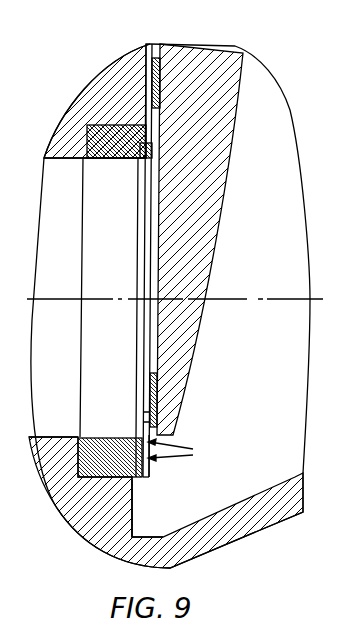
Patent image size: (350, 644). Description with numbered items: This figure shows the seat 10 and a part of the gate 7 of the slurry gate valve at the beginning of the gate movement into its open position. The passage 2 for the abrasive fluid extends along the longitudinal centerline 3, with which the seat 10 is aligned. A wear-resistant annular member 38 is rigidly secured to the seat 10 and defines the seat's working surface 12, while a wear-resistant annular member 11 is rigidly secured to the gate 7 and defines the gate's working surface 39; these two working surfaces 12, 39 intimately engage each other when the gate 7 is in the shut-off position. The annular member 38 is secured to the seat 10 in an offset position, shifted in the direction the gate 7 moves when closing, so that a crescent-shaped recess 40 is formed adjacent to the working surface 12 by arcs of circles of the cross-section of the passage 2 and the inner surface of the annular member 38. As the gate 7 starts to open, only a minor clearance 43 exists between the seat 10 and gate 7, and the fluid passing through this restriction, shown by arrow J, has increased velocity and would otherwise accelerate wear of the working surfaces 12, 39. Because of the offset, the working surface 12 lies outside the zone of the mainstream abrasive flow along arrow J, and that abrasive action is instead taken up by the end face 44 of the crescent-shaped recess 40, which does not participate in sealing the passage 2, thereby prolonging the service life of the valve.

The passage 2 is at (58, 193).
The longitudinal centerline 3 is at (30, 299).
The gate 7 is at (215, 143).
The seat 10 is at (115, 159).
The annular member 11 is at (155, 58).
The working surface 12 is at (141, 466).
The annular member 38 is at (134, 498).
The working surface 39 is at (148, 398).
The crescent-shaped recess 40 is at (119, 432).
The clearance 43 is at (143, 420).
The end face 44 is at (148, 460).
The arrow J is at (175, 454).